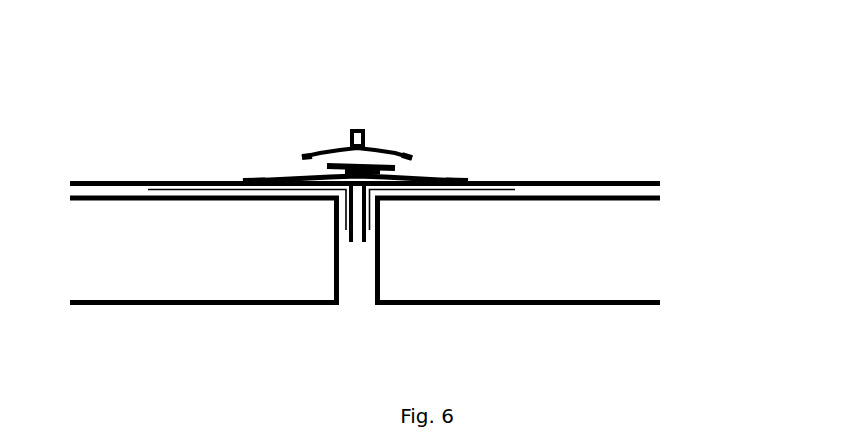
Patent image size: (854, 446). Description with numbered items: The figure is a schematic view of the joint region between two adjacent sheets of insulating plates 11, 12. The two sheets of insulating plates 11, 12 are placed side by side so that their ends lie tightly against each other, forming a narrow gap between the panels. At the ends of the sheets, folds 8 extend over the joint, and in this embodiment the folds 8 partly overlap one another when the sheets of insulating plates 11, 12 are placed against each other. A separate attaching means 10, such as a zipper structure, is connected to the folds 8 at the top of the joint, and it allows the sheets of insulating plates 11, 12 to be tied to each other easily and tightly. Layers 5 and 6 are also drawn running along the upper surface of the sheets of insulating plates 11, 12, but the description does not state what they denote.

The cover layer 5 is at (97, 181).
The adhesive layer 6 is at (183, 190).
The folds 8 is at (268, 175).
The attaching means 10 is at (330, 151).
The sheet of insulating plate 11 is at (221, 288).
The sheet of insulating plate 12 is at (531, 278).